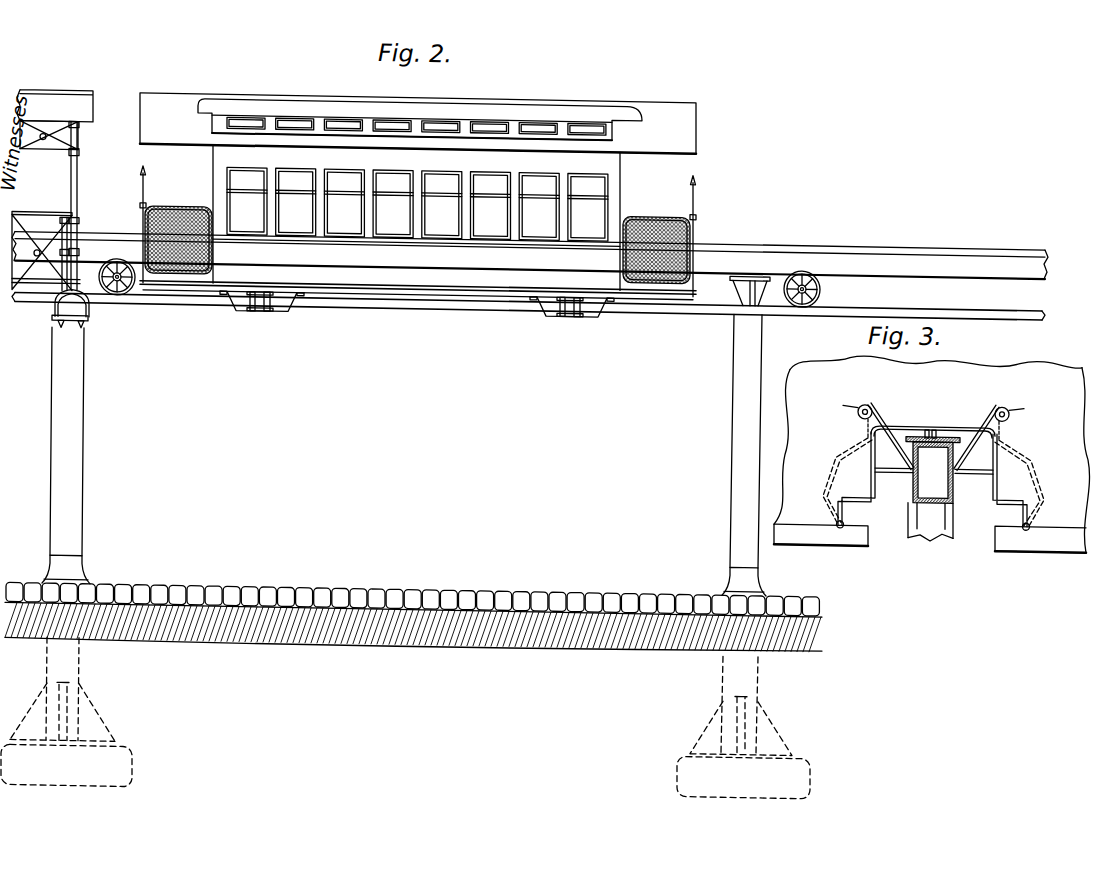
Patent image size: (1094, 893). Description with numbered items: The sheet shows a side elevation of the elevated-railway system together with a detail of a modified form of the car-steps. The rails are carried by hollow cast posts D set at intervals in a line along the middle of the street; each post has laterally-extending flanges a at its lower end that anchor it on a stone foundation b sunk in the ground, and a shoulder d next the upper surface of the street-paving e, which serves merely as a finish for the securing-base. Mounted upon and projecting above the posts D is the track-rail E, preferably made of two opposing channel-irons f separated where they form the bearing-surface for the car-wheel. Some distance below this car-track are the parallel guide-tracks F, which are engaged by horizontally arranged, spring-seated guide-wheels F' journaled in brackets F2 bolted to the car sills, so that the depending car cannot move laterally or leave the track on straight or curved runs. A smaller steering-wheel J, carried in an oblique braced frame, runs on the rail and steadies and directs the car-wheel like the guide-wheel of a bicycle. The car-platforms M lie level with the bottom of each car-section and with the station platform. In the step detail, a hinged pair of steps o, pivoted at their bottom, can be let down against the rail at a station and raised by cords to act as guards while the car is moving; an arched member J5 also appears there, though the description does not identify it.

In FIG. 2, the track-rail E is at (530, 266).
In FIG. 3, the track-rail E is at (933, 470).
In FIG. 2, the channel-irons f is at (750, 281).
In FIG. 3, the channel-irons f is at (911, 466).
In FIG. 2, the car-platforms M is at (183, 292).
In FIG. 3, the car-platforms M is at (789, 518).
In FIG. 2, the guide-tracks F is at (418, 317).
In FIG. 2, the guide-wheels F' is at (417, 316).
In FIG. 2, the brackets F2 is at (262, 316).
In FIG. 2, the posts D is at (76, 401).
In FIG. 3, the posts D is at (933, 523).
In FIG. 2, the shoulder d is at (86, 576).
In FIG. 2, the street-paving e is at (325, 597).
In FIG. 2, the laterally-extending flanges a is at (101, 722).
In FIG. 2, the stone foundation b is at (405, 771).
In FIG. 3, the steering-wheel J is at (937, 430).
In FIG. 3, the arch bar end J5 is at (904, 419).
In FIG. 3, the hinged pair of steps o is at (877, 497).